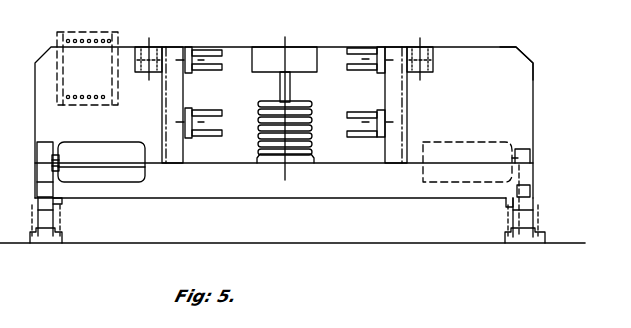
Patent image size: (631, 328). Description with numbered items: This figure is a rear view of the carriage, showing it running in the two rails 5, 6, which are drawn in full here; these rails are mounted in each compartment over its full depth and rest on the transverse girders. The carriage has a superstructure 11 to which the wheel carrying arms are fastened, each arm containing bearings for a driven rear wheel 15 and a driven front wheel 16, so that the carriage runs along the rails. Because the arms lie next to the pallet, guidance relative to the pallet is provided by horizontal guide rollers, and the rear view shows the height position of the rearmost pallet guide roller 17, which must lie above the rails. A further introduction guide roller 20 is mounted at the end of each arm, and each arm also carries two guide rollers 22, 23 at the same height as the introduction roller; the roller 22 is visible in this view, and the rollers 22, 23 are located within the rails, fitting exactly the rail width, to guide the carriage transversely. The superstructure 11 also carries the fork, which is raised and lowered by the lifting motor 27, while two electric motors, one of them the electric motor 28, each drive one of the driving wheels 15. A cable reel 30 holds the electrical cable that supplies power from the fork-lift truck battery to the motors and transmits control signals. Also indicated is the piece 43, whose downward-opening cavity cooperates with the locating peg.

The rail 5 is at (542, 238).
The rail 6 is at (60, 212).
The superstructure 11 is at (330, 62).
The driven rear wheel 15 is at (530, 192).
The driven front wheel 16 is at (440, 40).
The horizontal guide roller 17 is at (504, 204).
The guide roller 20 is at (516, 40).
The guide roller 22 is at (500, 232).
The guide roller 23 is at (403, 81).
The lifting motor 27 is at (268, 100).
The electric motor 28 is at (445, 148).
The cable reel 30 is at (77, 35).
The piece 43 is at (290, 58).